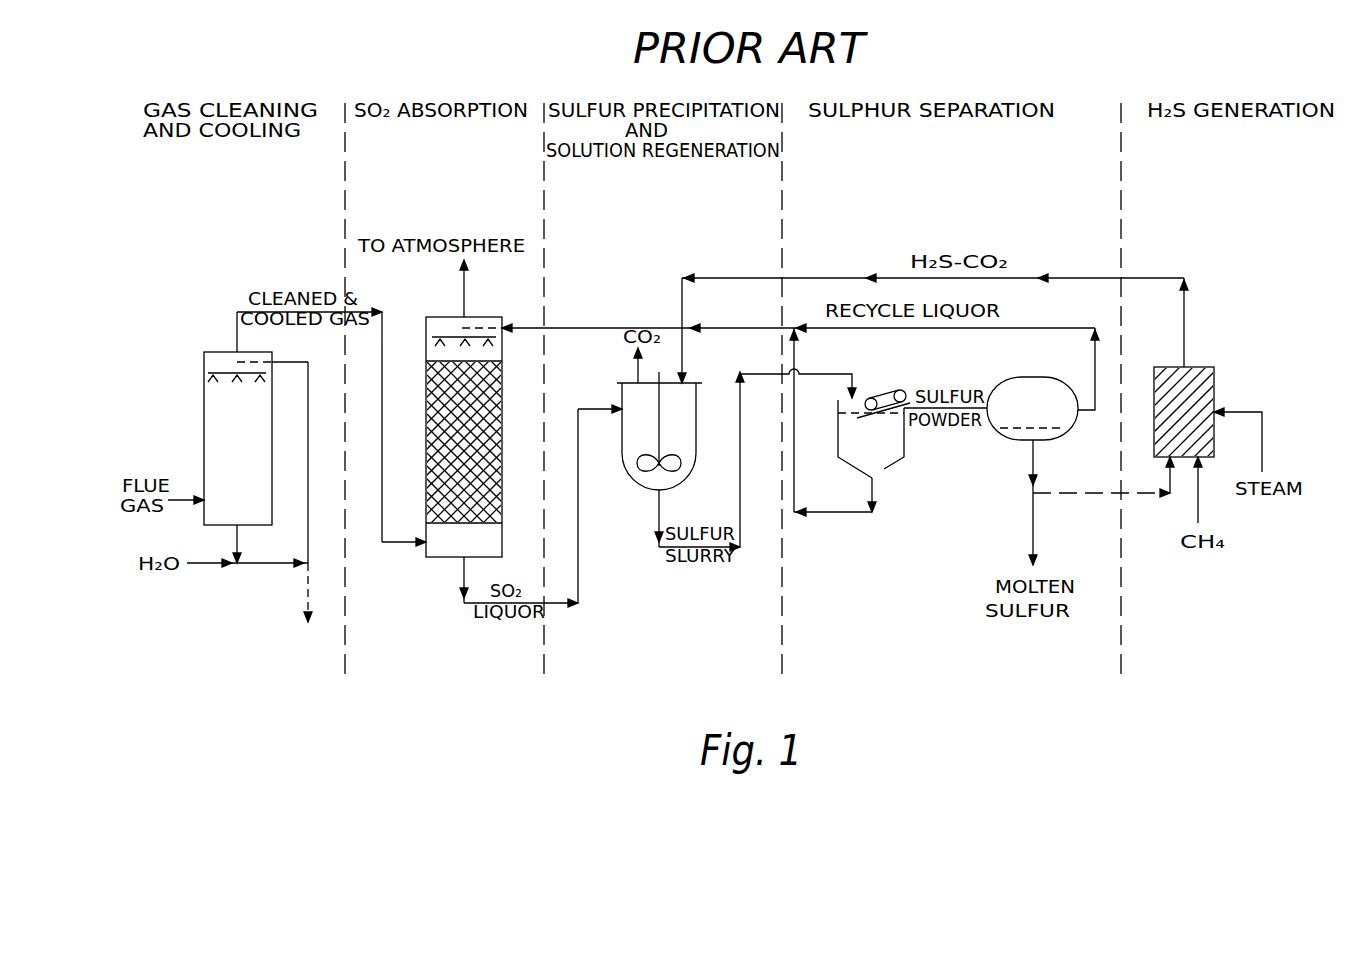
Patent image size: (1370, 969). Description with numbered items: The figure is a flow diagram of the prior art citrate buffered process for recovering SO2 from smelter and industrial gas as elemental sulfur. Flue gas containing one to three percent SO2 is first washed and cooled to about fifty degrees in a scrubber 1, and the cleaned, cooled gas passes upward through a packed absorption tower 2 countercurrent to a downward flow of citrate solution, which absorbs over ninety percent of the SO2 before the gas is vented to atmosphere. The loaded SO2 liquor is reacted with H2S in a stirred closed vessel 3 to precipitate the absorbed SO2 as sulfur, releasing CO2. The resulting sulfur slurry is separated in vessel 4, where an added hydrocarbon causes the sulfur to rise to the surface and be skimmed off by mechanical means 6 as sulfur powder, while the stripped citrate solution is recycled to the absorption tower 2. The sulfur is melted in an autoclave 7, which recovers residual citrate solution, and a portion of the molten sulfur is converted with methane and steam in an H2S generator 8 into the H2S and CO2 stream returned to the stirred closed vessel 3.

The scrubber 1 is at (207, 413).
The packed absorption tower 2 is at (428, 355).
The stirred closed vessel 3 is at (624, 470).
The vessel 4 is at (885, 470).
The mechanical means 6 is at (878, 395).
The autoclave 7 is at (1016, 441).
The H2S generator 8 is at (1215, 384).